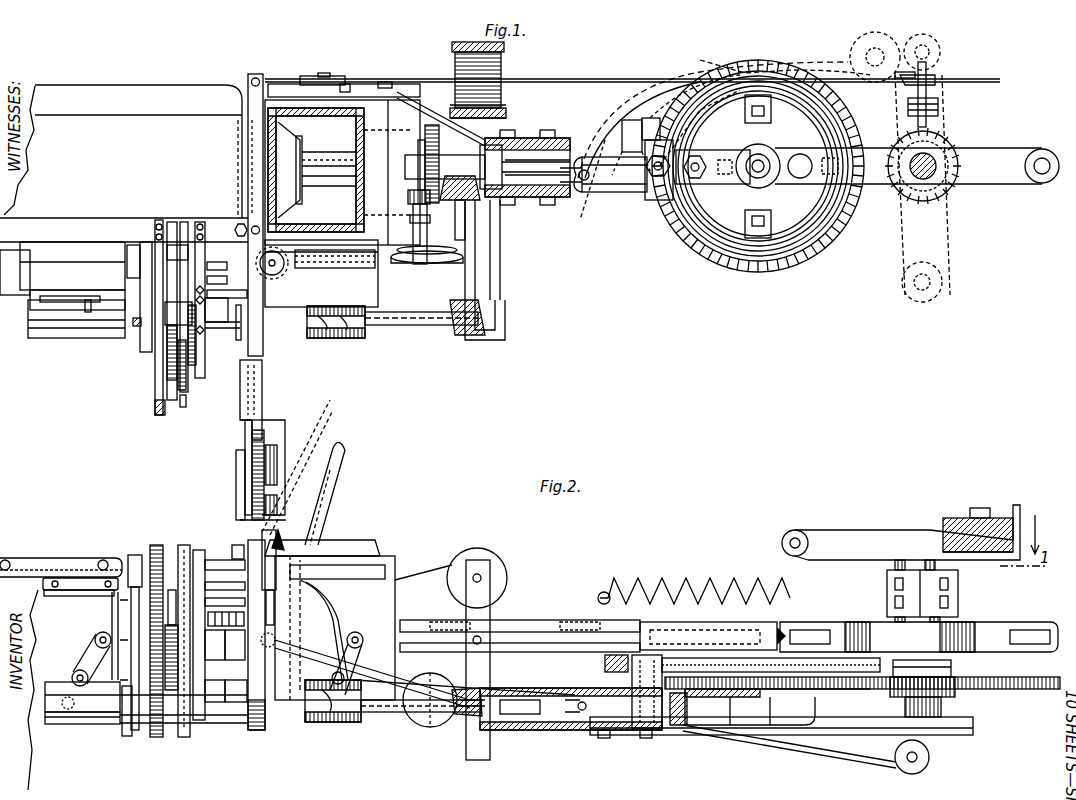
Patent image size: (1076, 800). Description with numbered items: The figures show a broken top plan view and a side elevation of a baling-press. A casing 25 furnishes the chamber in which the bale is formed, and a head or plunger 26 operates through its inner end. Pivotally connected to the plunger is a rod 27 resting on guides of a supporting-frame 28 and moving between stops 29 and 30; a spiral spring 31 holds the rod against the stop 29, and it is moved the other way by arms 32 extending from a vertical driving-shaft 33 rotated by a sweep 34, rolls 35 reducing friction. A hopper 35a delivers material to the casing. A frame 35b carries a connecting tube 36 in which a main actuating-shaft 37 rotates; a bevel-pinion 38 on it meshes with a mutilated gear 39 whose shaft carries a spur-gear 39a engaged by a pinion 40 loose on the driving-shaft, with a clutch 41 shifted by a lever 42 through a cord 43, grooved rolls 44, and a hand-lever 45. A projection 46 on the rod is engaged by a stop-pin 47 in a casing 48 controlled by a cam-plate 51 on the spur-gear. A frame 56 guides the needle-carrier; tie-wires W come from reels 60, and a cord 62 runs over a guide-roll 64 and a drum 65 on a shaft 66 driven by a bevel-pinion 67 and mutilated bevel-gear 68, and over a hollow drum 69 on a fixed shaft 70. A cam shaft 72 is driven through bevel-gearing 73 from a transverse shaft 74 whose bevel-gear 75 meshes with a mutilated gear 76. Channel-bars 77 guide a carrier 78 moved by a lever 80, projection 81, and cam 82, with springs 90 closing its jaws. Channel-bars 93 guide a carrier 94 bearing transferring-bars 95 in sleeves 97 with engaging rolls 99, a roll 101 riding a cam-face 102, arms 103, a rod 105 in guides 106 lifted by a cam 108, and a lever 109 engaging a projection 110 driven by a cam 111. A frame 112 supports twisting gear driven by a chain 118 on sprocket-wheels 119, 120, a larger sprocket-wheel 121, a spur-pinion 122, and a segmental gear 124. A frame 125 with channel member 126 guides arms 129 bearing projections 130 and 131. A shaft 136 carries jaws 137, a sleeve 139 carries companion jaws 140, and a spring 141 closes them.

In FIG. 1, the casing 25 is at (128, 100).
In FIG. 2, the casing 25 is at (26, 558).
In FIG. 1, the head or plunger 26 is at (290, 146).
In FIG. 1, the rod 27 is at (658, 200).
In FIG. 2, the rod 27 is at (565, 620).
In FIG. 2, the supporting-frame 28 is at (973, 724).
In FIG. 1, the stop 29 is at (718, 70).
In FIG. 1, the stop 30 is at (592, 192).
In FIG. 2, the stop 30 is at (705, 637).
In FIG. 2, the spiral spring 31 is at (698, 582).
In FIG. 1, the arms 32 is at (1022, 168).
In FIG. 1, the vertical driving-shaft 33 is at (938, 175).
In FIG. 2, the vertical driving-shaft 33 is at (942, 706).
In FIG. 2, the sweep 34 is at (948, 516).
In FIG. 1, the rolls 35 is at (775, 180).
In FIG. 1, the hopper 35a is at (292, 222).
In FIG. 2, the hopper 35a is at (375, 540).
In FIG. 1, the frame 35b is at (498, 140).
In FIG. 2, the frame 35b is at (388, 712).
In FIG. 1, the connecting member or tube 36 is at (605, 192).
In FIG. 2, the connecting member or tube 36 is at (535, 730).
In FIG. 1, the main actuating-shaft 37 is at (584, 183).
In FIG. 2, the main actuating-shaft 37 is at (582, 712).
In FIG. 2, the bevel-pinion 38 is at (684, 725).
In FIG. 2, the mutilated gear 39 is at (777, 707).
In FIG. 1, the spur-gear 39a is at (798, 262).
In FIG. 2, the spur-gear 39a is at (810, 689).
In FIG. 2, the pinion 40 is at (956, 688).
In FIG. 2, the clutch 41 is at (952, 666).
In FIG. 1, the lever 42 is at (928, 88).
In FIG. 1, the flexible member or cord 43 is at (585, 78).
In FIG. 2, the flexible member or cord 43 is at (822, 748).
In FIG. 1, the grooved rolls 44 is at (920, 70).
In FIG. 2, the grooved rolls 44 is at (930, 760).
In FIG. 1, the hand-lever 45 is at (318, 84).
In FIG. 1, the projection 46 is at (622, 128).
In FIG. 1, the pin or stop member 47 is at (652, 122).
In FIG. 2, the casing 48 is at (632, 690).
In FIG. 1, the cam-plate 51 is at (749, 166).
In FIG. 2, the cam-plate 51 is at (771, 660).
In FIG. 1, the frame 56 is at (263, 352).
In FIG. 2, the frame 56 is at (248, 726).
In FIG. 1, the reels 60 is at (466, 52).
In FIG. 2, the reels 60 is at (492, 590).
In FIG. 1, the cord or flexible operating member 62 is at (340, 252).
In FIG. 2, the cord or flexible operating member 62 is at (262, 540).
In FIG. 1, the guide-roll 64 is at (284, 263).
In FIG. 2, the guide-roll 64 is at (285, 640).
In FIG. 1, the drum 65 is at (427, 263).
In FIG. 2, the drum 65 is at (425, 727).
In FIG. 1, the shaft 66 is at (412, 206).
In FIG. 1, the bevel-pinion 67 is at (410, 192).
In FIG. 1, the mutilated bevel-gear 68 is at (434, 150).
In FIG. 2, the mutilated bevel-gear 68 is at (455, 690).
In FIG. 1, the hollow drum 69 is at (245, 454).
In FIG. 2, the hollow drum 69 is at (225, 548).
In FIG. 1, the shaft 70 is at (288, 468).
In FIG. 2, the shaft 70 is at (297, 479).
In FIG. 1, the counter-actuating or cam shaft 72 is at (428, 326).
In FIG. 1, the bevel-gearing 73 is at (488, 302).
In FIG. 2, the bevel-gearing 73 is at (470, 718).
In FIG. 1, the transverse shaft 74 is at (490, 252).
In FIG. 1, the bevel-gear 75 is at (457, 195).
In FIG. 1, the mutilated gear 76 is at (485, 160).
In FIG. 1, the channel-bars 77 is at (321, 273).
In FIG. 2, the channel-bars 77 is at (345, 565).
In FIG. 2, the carrier 78 is at (338, 598).
In FIG. 2, the lever 80 is at (366, 648).
In FIG. 2, the projection 81 is at (360, 633).
In FIG. 1, the cam 82 is at (362, 340).
In FIG. 2, the cam 82 is at (340, 722).
In FIG. 2, the springs 90 is at (286, 625).
In FIG. 1, the channel-bars 93 is at (62, 268).
In FIG. 2, the channel-bars 93 is at (62, 577).
In FIG. 2, the carrier 94 is at (118, 622).
In FIG. 2, the transferring-bars 95 is at (236, 645).
In FIG. 1, the tubular member or sleeve 97 is at (223, 300).
In FIG. 2, the engaging roll 99 is at (216, 645).
In FIG. 1, the roll 101 is at (79, 289).
In FIG. 1, the cam-face 102 is at (137, 244).
In FIG. 1, the arm 103 is at (146, 242).
In FIG. 2, the arm 103 is at (118, 604).
In FIG. 1, the rod 105 is at (148, 340).
In FIG. 2, the rod 105 is at (84, 697).
In FIG. 2, the guides 106 is at (134, 555).
In FIG. 2, the cam 108 is at (124, 736).
In FIG. 1, the lever 109 is at (80, 292).
In FIG. 2, the lever 109 is at (88, 646).
In FIG. 1, the projection 110 is at (92, 304).
In FIG. 2, the projection 110 is at (95, 640).
In FIG. 1, the cam 111 is at (58, 338).
In FIG. 2, the cam 111 is at (62, 724).
In FIG. 1, the frame 112 is at (200, 346).
In FIG. 2, the frame 112 is at (200, 722).
In FIG. 2, the chain 118 is at (225, 563).
In FIG. 2, the sprocket-wheel 119 is at (185, 545).
In FIG. 2, the sprocket-wheel 120 is at (178, 690).
In FIG. 1, the larger sprocket-wheel 121 is at (183, 407).
In FIG. 2, the larger sprocket-wheel 121 is at (226, 601).
In FIG. 1, the spur-pinion 122 is at (165, 380).
In FIG. 1, the segmental gear 124 is at (184, 316).
In FIG. 1, the frame 125 is at (156, 416).
In FIG. 2, the frame 125 is at (170, 534).
In FIG. 1, the channel member 126 is at (166, 360).
In FIG. 1, the horizontal arms 129 is at (208, 240).
In FIG. 1, the engaging projections 130 is at (172, 244).
In FIG. 1, the projections 131 is at (207, 307).
In FIG. 1, the shaft 136 is at (228, 292).
In FIG. 2, the jaws 137 is at (219, 691).
In FIG. 1, the sleeve 139 is at (225, 274).
In FIG. 2, the sleeve 139 is at (241, 691).
In FIG. 1, the companion jaws 140 is at (233, 263).
In FIG. 2, the companion jaws 140 is at (227, 619).
In FIG. 2, the spring 141 is at (225, 583).
In FIG. 1, the tie-wires W is at (408, 86).
In FIG. 2, the tie-wires W is at (422, 580).